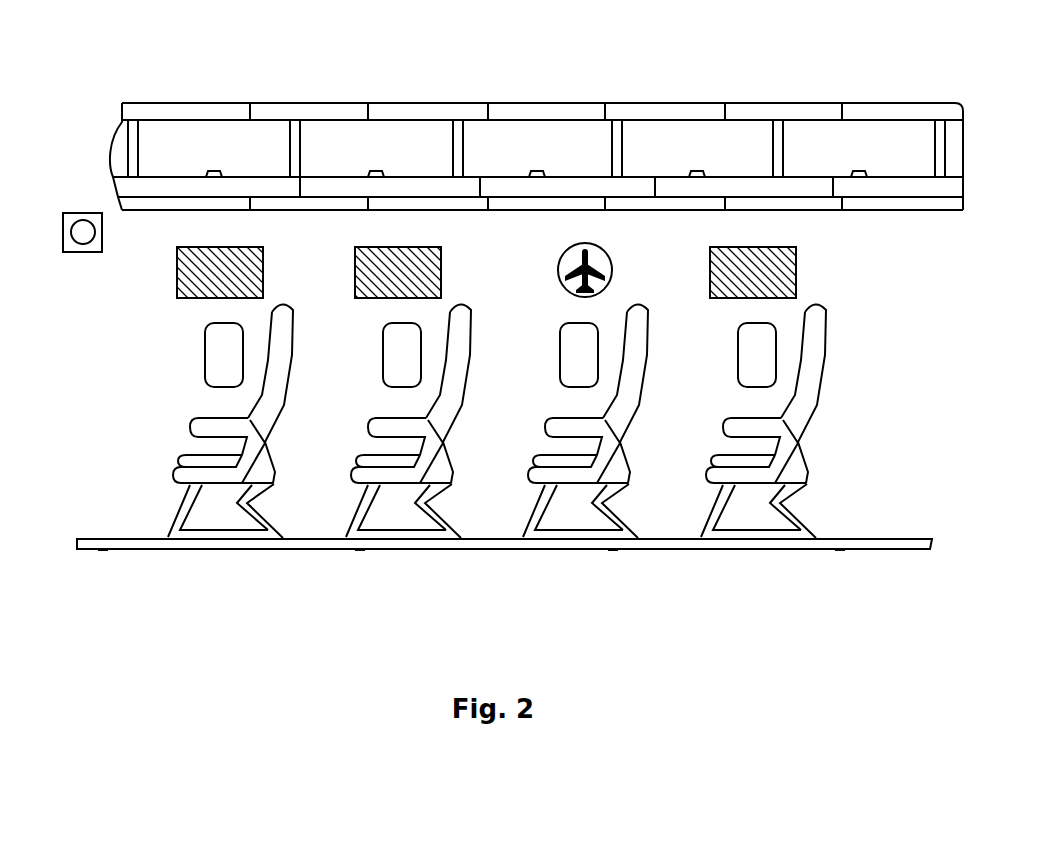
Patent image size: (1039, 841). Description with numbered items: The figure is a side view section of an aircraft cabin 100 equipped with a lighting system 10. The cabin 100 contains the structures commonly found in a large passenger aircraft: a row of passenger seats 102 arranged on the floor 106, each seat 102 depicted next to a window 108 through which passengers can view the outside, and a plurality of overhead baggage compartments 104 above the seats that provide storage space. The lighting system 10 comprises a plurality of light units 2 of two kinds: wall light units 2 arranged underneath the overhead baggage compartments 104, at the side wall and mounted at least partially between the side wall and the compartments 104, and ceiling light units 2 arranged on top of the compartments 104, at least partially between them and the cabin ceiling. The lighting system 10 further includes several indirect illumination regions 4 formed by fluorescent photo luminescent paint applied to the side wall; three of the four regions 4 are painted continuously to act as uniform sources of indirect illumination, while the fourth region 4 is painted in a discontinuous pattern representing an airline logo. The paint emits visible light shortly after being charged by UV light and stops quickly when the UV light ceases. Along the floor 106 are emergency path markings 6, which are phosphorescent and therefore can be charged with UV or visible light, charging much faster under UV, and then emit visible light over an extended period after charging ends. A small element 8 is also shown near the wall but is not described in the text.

The light unit 2 is at (189, 103).
The indirect illumination region 4 is at (260, 282).
The emergency path marking 6 is at (101, 551).
The control switch 8 is at (83, 252).
The lighting system 10 is at (890, 295).
The aircraft cabin 100 is at (115, 427).
The passenger seat 102 is at (286, 385).
The overhead baggage compartment 104 is at (239, 138).
The floor 106 is at (888, 538).
The window 108 is at (210, 343).